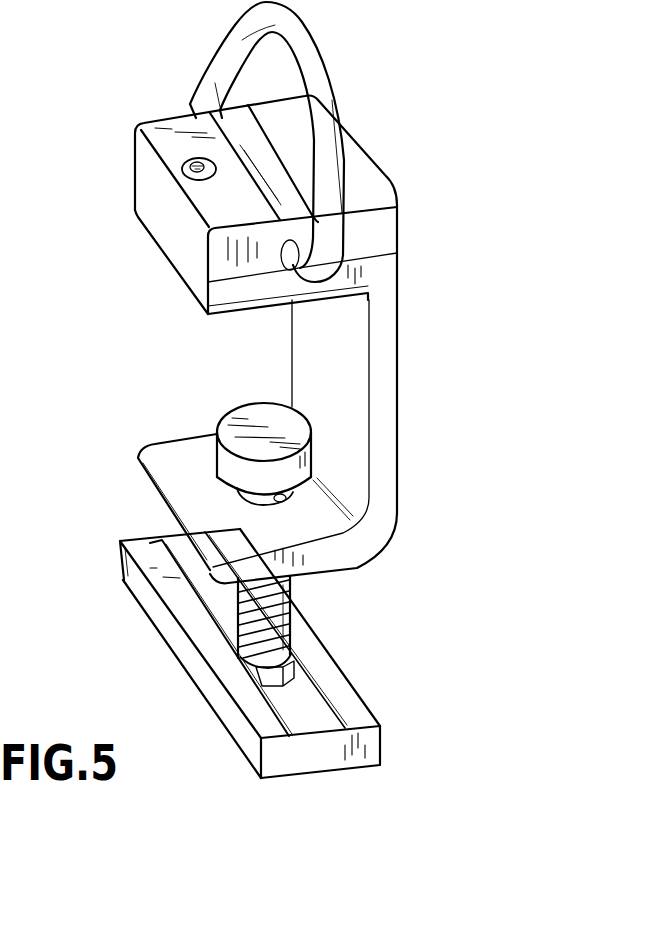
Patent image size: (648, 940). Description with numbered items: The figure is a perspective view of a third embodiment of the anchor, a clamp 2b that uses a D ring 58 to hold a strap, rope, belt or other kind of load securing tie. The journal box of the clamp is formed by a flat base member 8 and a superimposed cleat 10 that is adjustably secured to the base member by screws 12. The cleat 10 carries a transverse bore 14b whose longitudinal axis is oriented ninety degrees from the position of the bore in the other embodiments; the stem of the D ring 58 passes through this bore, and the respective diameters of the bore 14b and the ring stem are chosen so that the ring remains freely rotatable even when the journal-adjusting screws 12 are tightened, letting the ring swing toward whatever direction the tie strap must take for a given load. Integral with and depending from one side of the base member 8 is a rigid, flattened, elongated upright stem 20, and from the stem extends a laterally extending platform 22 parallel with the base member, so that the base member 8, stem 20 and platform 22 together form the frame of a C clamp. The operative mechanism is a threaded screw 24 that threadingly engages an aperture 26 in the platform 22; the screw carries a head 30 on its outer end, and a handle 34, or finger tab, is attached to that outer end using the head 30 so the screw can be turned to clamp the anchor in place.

The clamp 2b is at (303, 340).
The base member 8 is at (167, 237).
The cleat 10 is at (363, 183).
The screws 12 is at (186, 163).
The transverse bore 14b is at (283, 265).
The upright stem 20 is at (382, 387).
The laterally extending platform 22 is at (167, 457).
The threaded screw 24 is at (293, 592).
The aperture 26 is at (287, 500).
The head 30 is at (290, 670).
The handle 34 is at (372, 755).
The D ring 58 is at (317, 72).